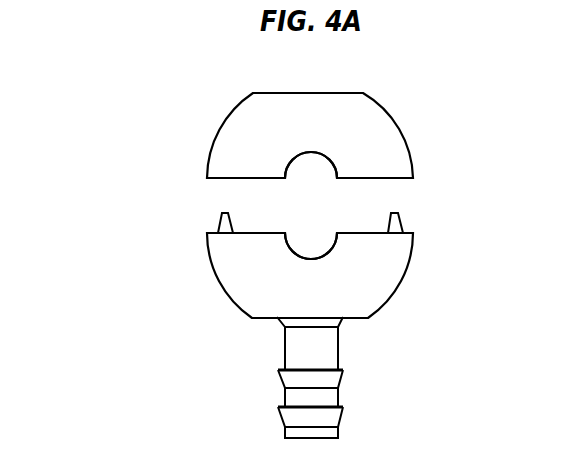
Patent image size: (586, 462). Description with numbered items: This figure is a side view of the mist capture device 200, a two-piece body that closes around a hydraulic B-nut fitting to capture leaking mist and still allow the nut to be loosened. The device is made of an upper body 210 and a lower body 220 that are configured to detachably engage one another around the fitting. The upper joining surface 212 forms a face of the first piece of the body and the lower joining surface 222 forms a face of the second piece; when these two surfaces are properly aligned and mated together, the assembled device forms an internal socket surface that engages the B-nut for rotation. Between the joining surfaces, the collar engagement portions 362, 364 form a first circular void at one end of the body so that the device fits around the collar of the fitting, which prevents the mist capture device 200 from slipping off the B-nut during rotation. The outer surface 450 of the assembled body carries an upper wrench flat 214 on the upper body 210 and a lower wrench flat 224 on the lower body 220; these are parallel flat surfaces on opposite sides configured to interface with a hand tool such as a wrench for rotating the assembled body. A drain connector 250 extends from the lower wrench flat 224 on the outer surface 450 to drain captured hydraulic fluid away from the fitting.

The mist capture device 200 is at (120, 176).
The upper body 210 is at (201, 136).
The upper joining surface 212 is at (253, 178).
The upper wrench flat 214 is at (288, 93).
The lower body 220 is at (205, 296).
The lower joining surface 222 is at (262, 233).
The lower wrench flat 224 is at (355, 321).
The drain connector 250 is at (338, 396).
The collar engagement portion 362 is at (318, 186).
The collar engagement portion 364 is at (306, 222).
The outer surface 450 is at (431, 166).